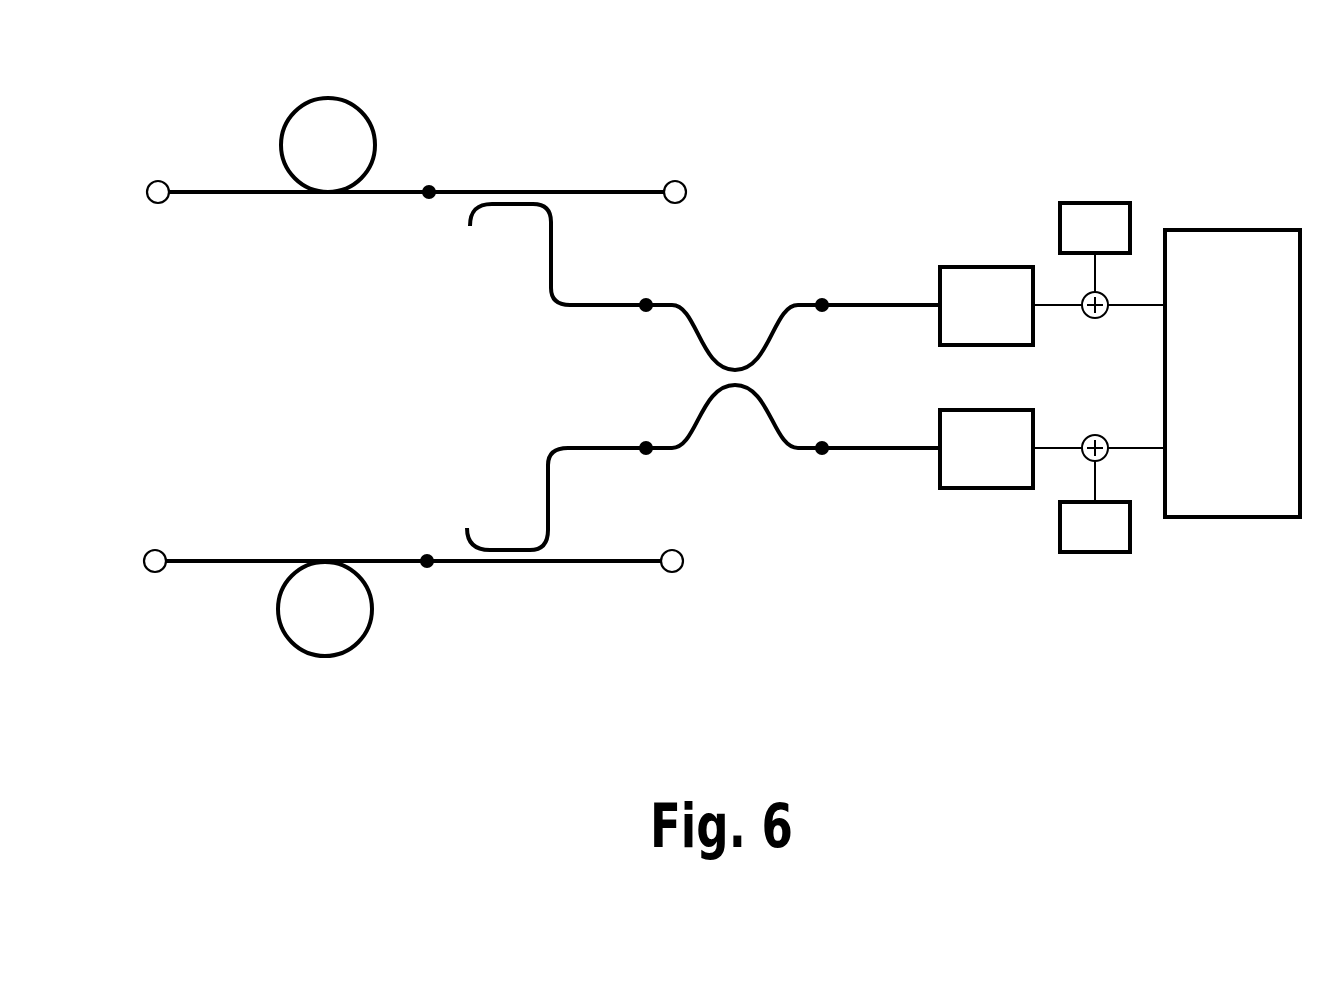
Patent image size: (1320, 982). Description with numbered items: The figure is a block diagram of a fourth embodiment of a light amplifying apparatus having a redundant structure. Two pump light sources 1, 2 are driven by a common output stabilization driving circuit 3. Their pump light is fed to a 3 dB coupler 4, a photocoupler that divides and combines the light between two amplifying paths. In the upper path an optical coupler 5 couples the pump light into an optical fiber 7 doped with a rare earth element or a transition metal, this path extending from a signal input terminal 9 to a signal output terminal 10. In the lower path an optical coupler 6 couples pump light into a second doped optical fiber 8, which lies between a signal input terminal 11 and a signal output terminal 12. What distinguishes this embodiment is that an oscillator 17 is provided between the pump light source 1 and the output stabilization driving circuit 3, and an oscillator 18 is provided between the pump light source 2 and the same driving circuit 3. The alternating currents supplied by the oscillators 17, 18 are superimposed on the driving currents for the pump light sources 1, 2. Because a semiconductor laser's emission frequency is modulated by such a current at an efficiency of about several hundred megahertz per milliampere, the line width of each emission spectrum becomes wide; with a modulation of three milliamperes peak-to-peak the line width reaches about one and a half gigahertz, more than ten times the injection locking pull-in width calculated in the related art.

The pump light source 1 is at (970, 267).
The pump light source 2 is at (985, 490).
The output stabilization driving circuit 3 is at (1210, 230).
The 3 dB coupler 4 is at (684, 304).
The optical coupler 5 is at (500, 192).
The optical coupler 6 is at (533, 563).
The optical fiber 7 is at (331, 98).
The optical fiber 8 is at (305, 655).
The signal input terminal 9 is at (163, 181).
The signal output terminal 10 is at (680, 182).
The signal input terminal 11 is at (160, 550).
The signal output terminal 12 is at (667, 573).
The oscillator 17 is at (1087, 203).
The oscillator 18 is at (1093, 553).